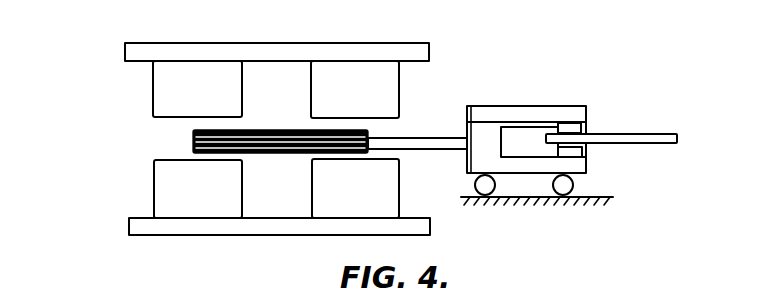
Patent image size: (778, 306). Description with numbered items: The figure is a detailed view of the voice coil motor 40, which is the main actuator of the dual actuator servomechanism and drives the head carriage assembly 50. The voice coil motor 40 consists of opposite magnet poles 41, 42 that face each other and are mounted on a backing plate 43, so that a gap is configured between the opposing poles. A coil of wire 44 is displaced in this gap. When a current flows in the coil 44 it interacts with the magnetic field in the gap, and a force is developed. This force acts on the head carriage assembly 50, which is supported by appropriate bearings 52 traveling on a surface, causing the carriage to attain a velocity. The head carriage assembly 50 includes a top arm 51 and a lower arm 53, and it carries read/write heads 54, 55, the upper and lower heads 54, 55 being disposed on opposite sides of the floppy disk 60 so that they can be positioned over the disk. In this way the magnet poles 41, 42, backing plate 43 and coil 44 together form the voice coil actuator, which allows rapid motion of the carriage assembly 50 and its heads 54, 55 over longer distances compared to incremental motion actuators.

The voice coil motor 40 is at (92, 138).
The magnet pole 41 is at (153, 89).
The magnet pole 42 is at (154, 191).
The backing plate 43 is at (183, 49).
The coil of wire 44 is at (254, 130).
The head carriage assembly 50 is at (564, 76).
The top arm 51 is at (480, 110).
The bearings 52 is at (565, 200).
The lower arm 53 is at (575, 167).
The read/write head 54 is at (583, 127).
The read/write head 55 is at (582, 150).
The floppy disk 60 is at (663, 135).